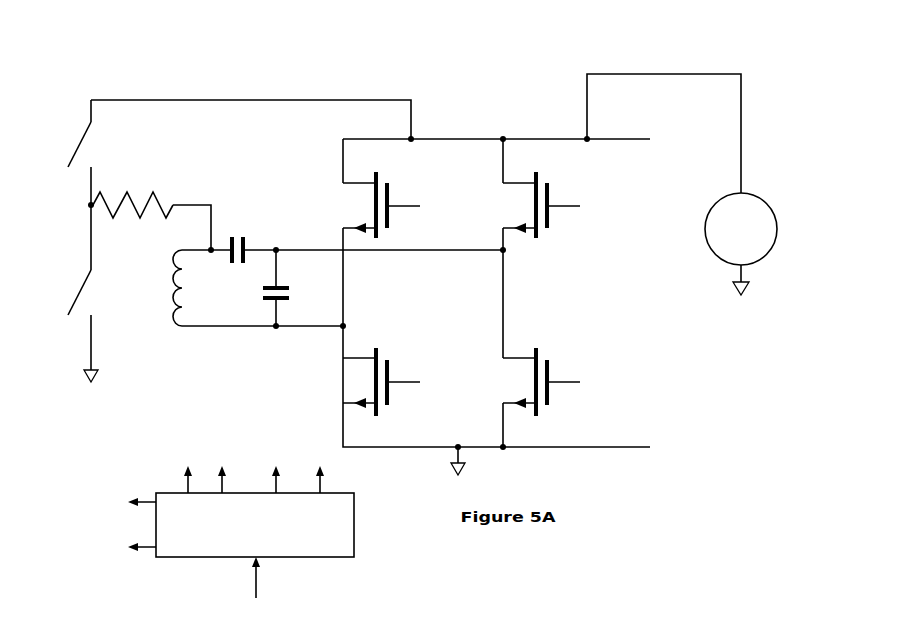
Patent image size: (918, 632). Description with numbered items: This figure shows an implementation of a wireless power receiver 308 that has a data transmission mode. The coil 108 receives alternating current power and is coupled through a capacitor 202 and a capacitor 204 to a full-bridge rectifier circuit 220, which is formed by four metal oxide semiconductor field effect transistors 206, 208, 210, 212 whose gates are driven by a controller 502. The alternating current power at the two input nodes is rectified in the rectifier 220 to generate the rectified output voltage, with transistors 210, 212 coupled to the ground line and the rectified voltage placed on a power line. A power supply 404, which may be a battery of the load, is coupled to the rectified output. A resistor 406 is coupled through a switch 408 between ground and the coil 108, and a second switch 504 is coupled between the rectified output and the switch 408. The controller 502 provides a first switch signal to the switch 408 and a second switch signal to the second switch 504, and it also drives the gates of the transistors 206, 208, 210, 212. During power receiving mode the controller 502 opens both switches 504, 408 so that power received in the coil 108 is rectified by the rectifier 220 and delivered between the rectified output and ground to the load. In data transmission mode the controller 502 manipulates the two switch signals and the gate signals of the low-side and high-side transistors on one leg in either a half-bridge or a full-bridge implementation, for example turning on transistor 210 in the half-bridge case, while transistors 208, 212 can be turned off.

The receiver 308 is at (80, 68).
The second switch 504 is at (91, 156).
The switch 408 is at (83, 318).
The resistor 406 is at (160, 198).
The coil 108 is at (170, 275).
The capacitor 202 is at (241, 234).
The capacitor 204 is at (267, 298).
The full-bridge rectifier circuit 220 is at (440, 306).
The transistor 206 is at (377, 188).
The transistor 208 is at (537, 183).
The transistor 210 is at (390, 362).
The transistor 212 is at (537, 360).
The power supply 404 is at (760, 213).
The controller 502 is at (172, 555).